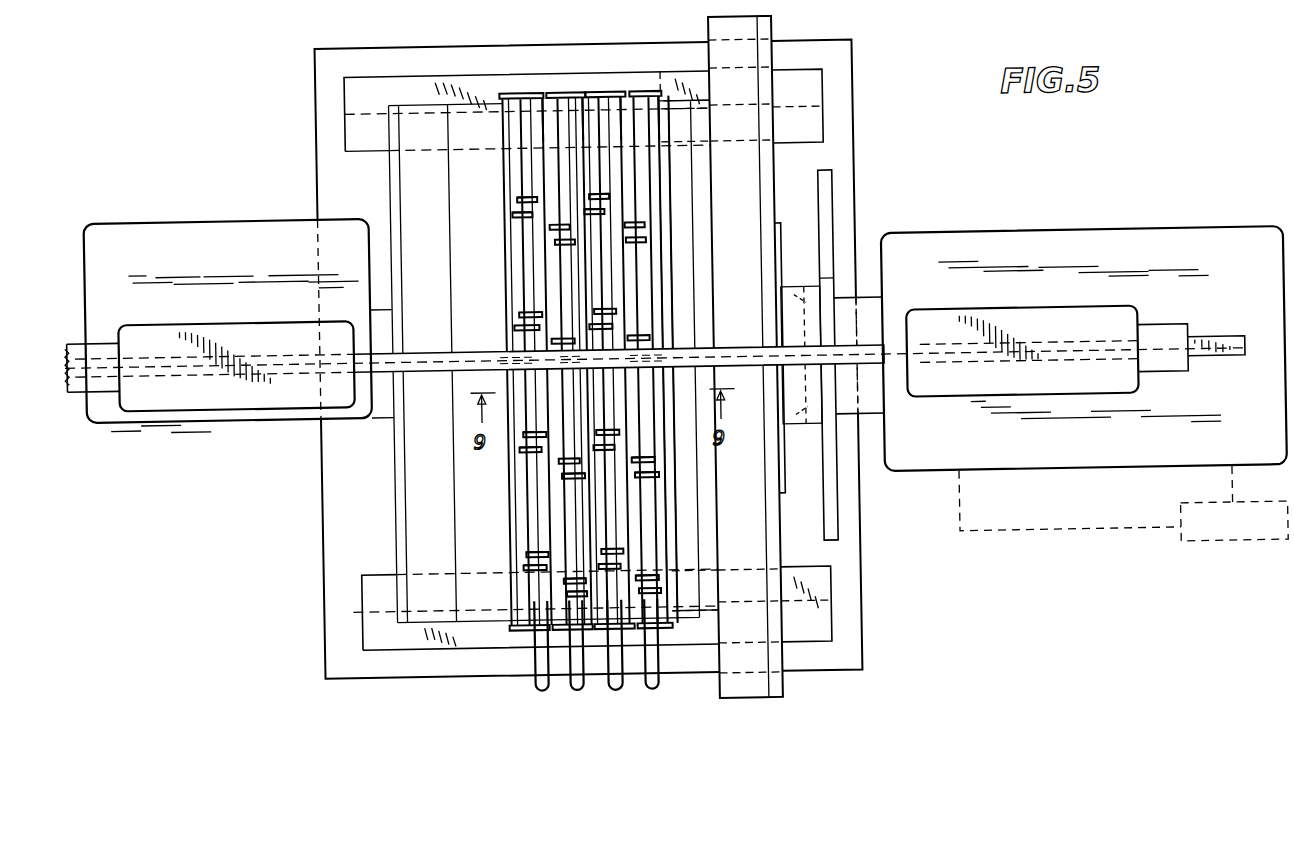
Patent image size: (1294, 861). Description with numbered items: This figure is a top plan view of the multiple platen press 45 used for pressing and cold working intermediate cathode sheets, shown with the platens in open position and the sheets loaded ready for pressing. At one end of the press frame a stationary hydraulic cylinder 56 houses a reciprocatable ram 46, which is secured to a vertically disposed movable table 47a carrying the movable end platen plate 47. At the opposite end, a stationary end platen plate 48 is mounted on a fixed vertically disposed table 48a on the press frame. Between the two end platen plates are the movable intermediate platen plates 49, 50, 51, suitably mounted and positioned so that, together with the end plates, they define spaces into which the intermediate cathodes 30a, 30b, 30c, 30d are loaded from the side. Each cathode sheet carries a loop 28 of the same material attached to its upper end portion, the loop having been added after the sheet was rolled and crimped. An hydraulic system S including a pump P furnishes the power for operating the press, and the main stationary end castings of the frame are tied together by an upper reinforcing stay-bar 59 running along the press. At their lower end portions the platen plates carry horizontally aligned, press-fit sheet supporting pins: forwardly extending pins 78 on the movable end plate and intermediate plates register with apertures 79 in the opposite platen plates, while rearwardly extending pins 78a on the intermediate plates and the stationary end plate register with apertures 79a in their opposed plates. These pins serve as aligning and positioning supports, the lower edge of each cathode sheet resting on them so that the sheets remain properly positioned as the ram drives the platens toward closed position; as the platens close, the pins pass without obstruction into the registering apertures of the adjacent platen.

The loop 28 is at (537, 690).
The intermediate cathode sheet 30a is at (637, 157).
The intermediate cathode sheet 30b is at (605, 172).
The intermediate cathode sheet 30c is at (562, 185).
The intermediate cathode sheet 30d is at (526, 160).
The multiple platen press 45 is at (862, 533).
The ram 46 is at (857, 302).
The movable end platen plate 47 is at (660, 108).
The movable table 47a is at (686, 122).
The stationary end platen plate 48 is at (506, 117).
The fixed table 48a is at (465, 128).
The intermediate platen plate 49 is at (630, 112).
The intermediate platen plate 50 is at (590, 112).
The intermediate platen plate 51 is at (549, 112).
The hydraulic cylinder 56 is at (1106, 458).
The upper reinforcing stay-bar 59 is at (746, 351).
The forwardly extending pin 78 is at (565, 215).
The rearwardly extending pin 78a is at (562, 450).
The aperture 79 is at (545, 207).
The aperture 79a is at (560, 482).
The hydraulic system S is at (1098, 538).
The pump P is at (1248, 545).